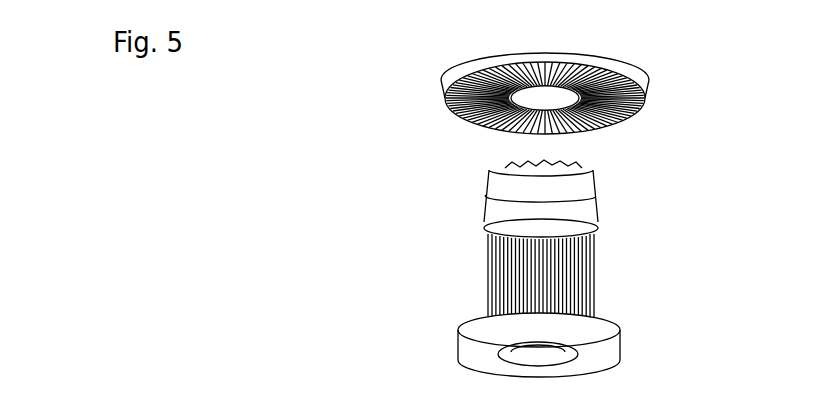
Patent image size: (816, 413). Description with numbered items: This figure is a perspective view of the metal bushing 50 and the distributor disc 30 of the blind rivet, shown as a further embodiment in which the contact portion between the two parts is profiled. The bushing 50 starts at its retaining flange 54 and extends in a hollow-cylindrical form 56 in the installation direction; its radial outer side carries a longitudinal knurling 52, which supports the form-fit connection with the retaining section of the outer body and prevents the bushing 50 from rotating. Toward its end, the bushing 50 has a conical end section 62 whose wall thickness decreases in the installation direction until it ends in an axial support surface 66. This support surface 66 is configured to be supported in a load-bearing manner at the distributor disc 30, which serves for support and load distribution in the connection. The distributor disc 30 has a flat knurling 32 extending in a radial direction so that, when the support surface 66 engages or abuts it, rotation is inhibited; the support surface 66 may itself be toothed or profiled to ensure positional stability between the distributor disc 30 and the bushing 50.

The distributor disc 30 is at (612, 98).
The flat knurling 32 is at (645, 112).
The metal bushing 50 is at (575, 268).
The longitudinal knurling 52 is at (549, 275).
The retaining flange 54 is at (618, 338).
The hollow-cylindrical form 56 is at (488, 295).
The conical end section 62 is at (626, 198).
The axial support surface 66 is at (578, 165).